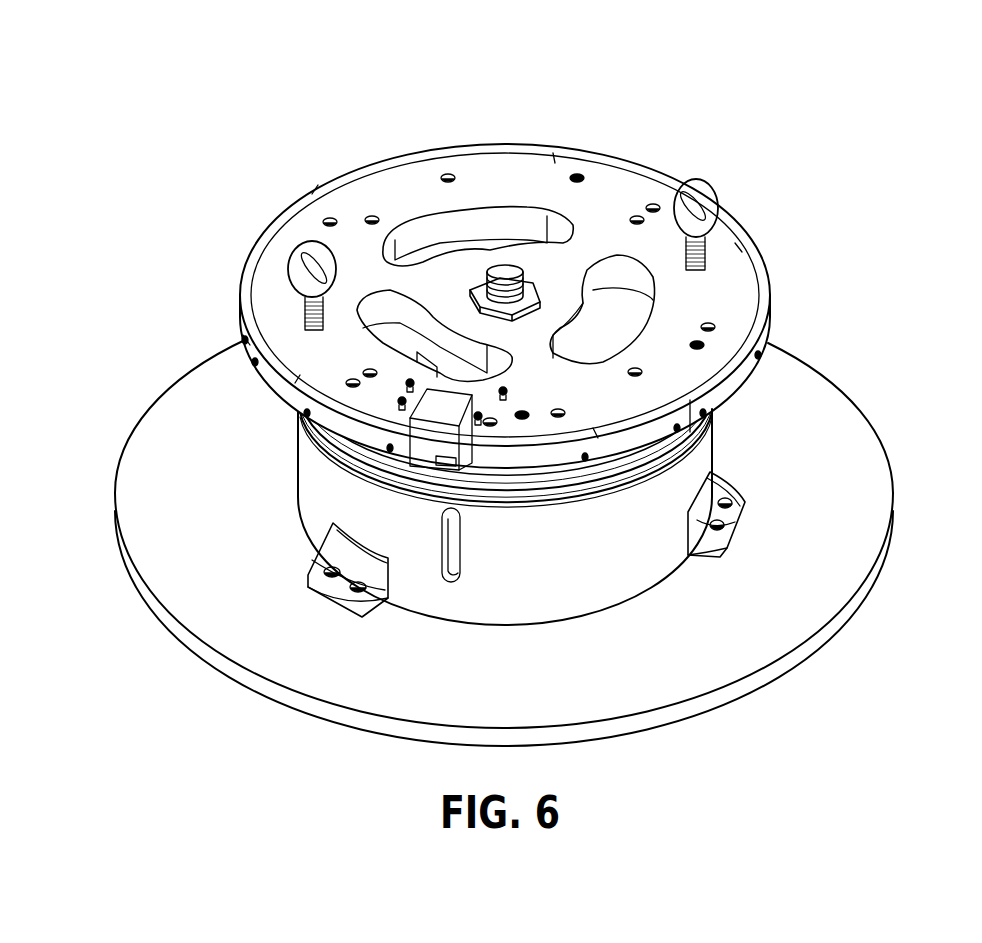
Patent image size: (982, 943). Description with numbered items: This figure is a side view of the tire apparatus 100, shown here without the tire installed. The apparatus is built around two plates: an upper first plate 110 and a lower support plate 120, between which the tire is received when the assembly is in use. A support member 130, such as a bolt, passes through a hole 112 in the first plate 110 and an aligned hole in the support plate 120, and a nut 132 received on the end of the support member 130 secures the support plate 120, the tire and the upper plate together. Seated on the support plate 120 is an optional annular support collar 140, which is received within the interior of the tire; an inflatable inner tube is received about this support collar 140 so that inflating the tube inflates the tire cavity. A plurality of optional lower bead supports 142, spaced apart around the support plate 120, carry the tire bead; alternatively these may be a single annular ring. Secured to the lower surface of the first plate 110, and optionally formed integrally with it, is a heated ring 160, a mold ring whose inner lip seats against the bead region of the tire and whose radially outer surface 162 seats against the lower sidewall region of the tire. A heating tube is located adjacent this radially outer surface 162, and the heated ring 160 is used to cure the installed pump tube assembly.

The tire apparatus 100 is at (892, 197).
The first plate 110 is at (734, 244).
The hole 112 is at (531, 259).
The support plate 120 is at (866, 419).
The support member 130 is at (505, 265).
The nut 132 is at (484, 258).
The support collar 140 is at (562, 620).
The lower bead support 142 is at (378, 602).
The heated ring 160 is at (625, 473).
The radially outer surface 162 is at (397, 481).